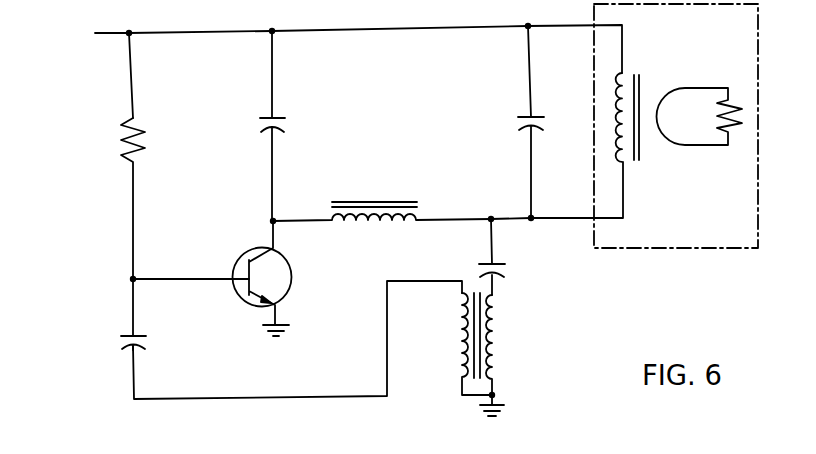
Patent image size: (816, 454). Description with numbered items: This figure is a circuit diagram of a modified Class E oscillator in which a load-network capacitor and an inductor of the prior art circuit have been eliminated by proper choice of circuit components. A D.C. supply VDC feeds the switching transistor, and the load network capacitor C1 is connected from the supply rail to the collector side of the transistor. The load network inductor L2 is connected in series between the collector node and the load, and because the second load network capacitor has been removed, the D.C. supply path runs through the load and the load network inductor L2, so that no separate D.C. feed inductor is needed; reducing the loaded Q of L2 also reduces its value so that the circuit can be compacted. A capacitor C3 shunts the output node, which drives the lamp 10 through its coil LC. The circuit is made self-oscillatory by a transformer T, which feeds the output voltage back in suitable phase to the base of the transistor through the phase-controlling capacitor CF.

The DC supply voltage VDC is at (96, 32).
The load network capacitor C1 is at (279, 130).
The load network inductor L2 is at (394, 200).
The capacitor C3 is at (520, 124).
The phase-controlling capacitor CF is at (121, 340).
The transformer T is at (493, 335).
The lamp coil LC is at (626, 73).
The lamp 10 is at (676, 126).